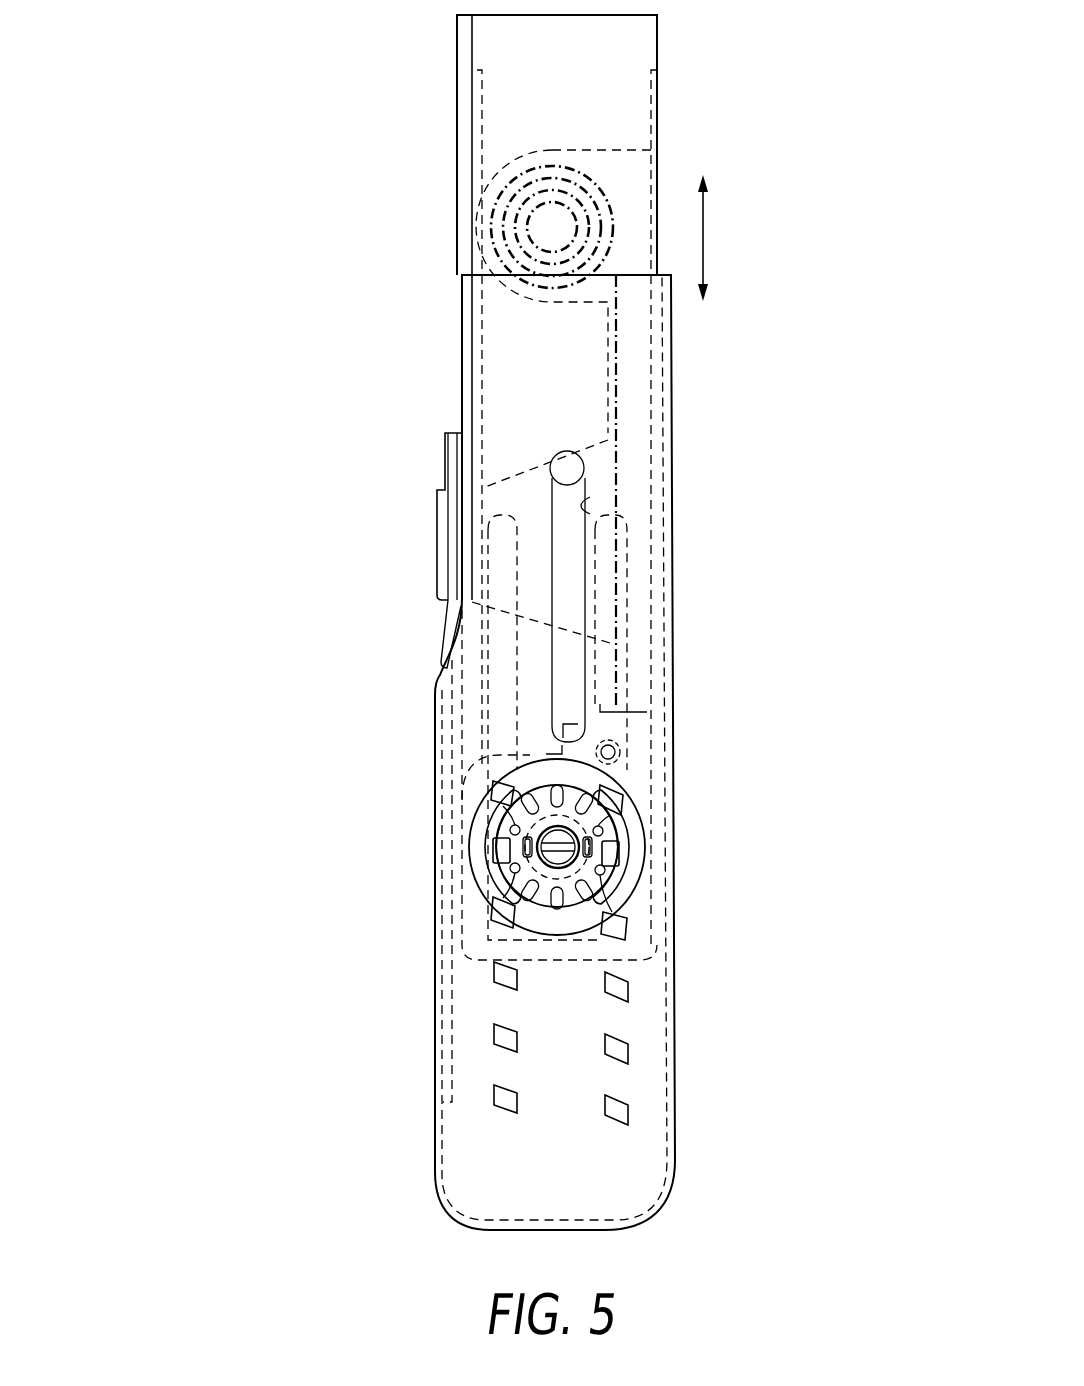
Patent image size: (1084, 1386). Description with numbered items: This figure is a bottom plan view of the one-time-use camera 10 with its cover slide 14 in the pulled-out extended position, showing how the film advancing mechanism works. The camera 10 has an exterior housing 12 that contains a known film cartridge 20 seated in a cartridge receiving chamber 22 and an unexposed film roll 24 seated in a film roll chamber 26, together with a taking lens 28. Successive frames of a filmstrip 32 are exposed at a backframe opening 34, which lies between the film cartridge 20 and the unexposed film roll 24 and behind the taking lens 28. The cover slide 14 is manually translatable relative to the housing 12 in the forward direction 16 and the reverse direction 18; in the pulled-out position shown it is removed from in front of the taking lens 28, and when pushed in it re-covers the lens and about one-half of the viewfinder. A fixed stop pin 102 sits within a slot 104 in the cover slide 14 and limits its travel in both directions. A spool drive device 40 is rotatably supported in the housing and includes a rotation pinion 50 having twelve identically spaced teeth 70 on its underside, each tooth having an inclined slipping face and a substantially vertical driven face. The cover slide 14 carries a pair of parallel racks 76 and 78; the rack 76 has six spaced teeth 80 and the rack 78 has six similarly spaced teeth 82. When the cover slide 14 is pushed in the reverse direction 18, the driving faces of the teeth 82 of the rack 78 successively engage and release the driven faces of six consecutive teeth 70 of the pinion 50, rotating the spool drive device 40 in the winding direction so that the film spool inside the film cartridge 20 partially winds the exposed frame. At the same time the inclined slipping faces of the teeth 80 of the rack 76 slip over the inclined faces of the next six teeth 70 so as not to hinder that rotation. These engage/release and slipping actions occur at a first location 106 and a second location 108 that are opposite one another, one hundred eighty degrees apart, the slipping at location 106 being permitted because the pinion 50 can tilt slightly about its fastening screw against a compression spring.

The one-time-use camera 10 is at (258, 146).
The exterior housing 12 is at (457, 37).
The cover slide 14 is at (424, 657).
The forward direction 16 is at (706, 294).
The reverse direction 18 is at (706, 183).
The film cartridge 20 is at (647, 712).
The cartridge receiving chamber 22 is at (652, 758).
The unexposed film roll 24 is at (488, 206).
The film roll chamber 26 is at (631, 155).
The taking lens 28 is at (437, 527).
The filmstrip 32 is at (616, 366).
The backframe opening 34 is at (598, 444).
The spool drive device 40 is at (560, 838).
The rotation pinion 50 is at (556, 788).
The teeth 70 is at (500, 816).
The rack 76 is at (652, 1075).
The rack 78 is at (467, 1068).
The teeth 80 is at (628, 1045).
The teeth 82 is at (494, 1035).
The fixed stop pin 102 is at (564, 462).
The slot 104 is at (590, 497).
The first location 106 is at (480, 845).
The second location 108 is at (635, 858).